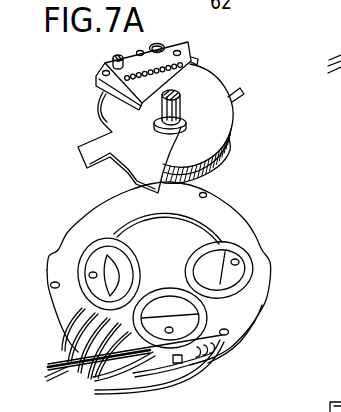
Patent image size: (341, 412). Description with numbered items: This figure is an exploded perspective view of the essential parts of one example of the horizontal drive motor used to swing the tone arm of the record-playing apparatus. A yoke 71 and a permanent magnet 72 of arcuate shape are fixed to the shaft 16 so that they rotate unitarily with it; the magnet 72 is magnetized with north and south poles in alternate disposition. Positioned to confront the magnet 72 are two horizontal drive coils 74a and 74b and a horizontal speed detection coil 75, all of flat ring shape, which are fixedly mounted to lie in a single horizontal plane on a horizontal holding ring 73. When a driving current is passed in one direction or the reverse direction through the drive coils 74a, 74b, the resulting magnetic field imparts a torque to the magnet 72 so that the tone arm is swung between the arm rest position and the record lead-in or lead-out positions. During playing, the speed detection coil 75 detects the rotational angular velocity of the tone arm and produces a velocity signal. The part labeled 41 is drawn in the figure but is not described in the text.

The shaft 16 is at (178, 96).
The bracket lever 41 is at (104, 112).
The yoke 71 is at (218, 118).
The permanent magnet 72 is at (211, 176).
The horizontal holding ring 73 is at (252, 232).
The horizontal drive coil 74a is at (92, 250).
The horizontal drive coil 74b is at (207, 314).
The horizontal speed detection coil 75 is at (240, 288).